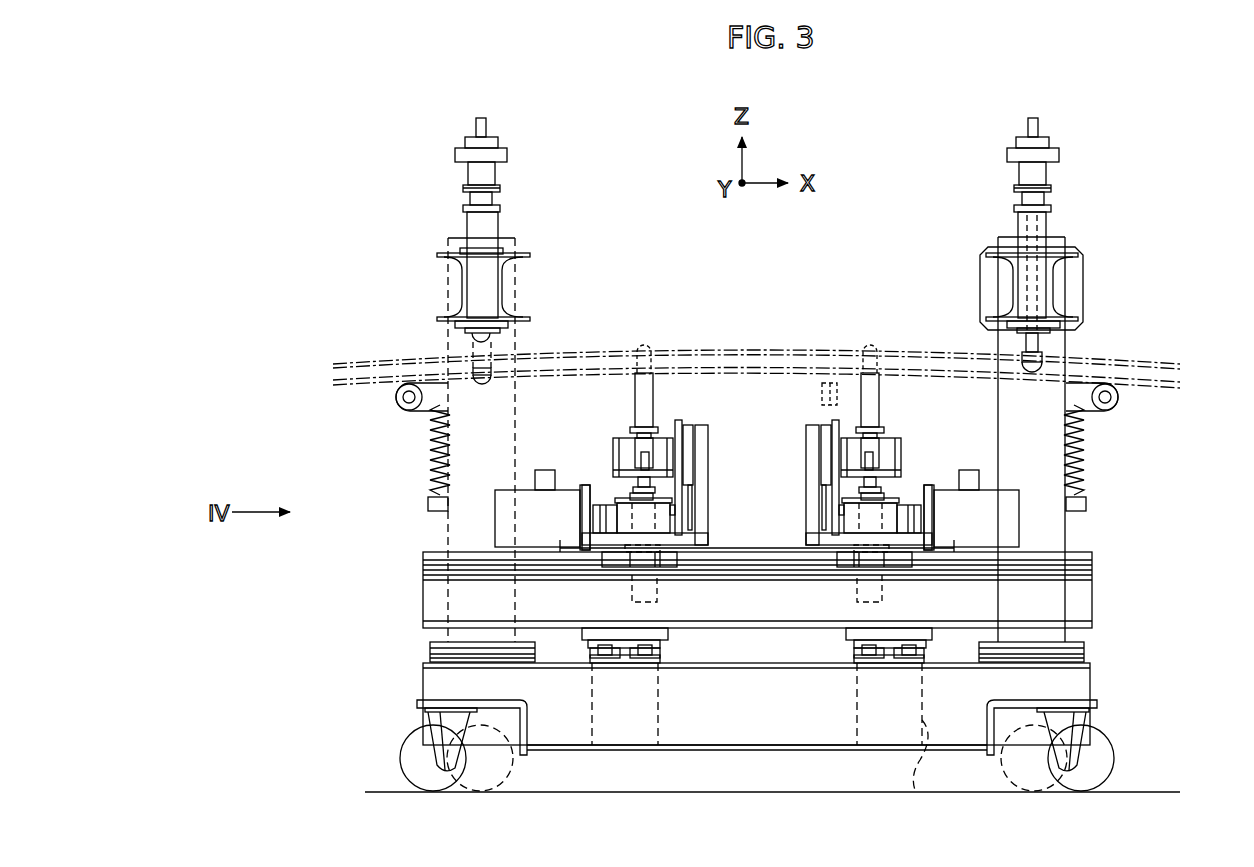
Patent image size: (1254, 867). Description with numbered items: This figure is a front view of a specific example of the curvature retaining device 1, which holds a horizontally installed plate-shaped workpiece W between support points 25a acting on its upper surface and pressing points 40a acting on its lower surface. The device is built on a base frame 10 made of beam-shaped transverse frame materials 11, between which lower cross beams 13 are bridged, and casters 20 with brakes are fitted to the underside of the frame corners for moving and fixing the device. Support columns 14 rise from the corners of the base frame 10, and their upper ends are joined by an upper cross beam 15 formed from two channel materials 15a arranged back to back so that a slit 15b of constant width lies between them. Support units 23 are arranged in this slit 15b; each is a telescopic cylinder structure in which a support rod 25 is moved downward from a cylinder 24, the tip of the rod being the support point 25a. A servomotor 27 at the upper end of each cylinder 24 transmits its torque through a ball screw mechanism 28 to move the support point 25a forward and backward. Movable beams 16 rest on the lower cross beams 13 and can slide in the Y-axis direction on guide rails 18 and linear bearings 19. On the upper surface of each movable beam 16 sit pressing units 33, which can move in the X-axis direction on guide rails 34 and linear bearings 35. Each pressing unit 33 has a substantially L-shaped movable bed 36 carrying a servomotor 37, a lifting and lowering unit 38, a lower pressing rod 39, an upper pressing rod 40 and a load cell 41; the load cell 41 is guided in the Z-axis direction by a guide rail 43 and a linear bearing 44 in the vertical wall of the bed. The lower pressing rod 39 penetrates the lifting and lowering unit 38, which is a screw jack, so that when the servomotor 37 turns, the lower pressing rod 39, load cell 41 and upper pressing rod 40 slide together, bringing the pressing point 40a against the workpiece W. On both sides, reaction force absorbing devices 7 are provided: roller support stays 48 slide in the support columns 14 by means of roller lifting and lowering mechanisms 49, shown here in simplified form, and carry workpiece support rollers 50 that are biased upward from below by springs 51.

The curvature retaining device 1 is at (613, 181).
The reaction force absorbing device 7 is at (738, 447).
The base frame 10 is at (717, 752).
The transverse frame material 11 is at (797, 733).
The lower cross beam 13 is at (590, 716).
The support column 14 is at (446, 528).
The upper cross beam 15 is at (734, 261).
The channel material 15a is at (440, 253).
The slit 15b is at (488, 285).
The movable beam 16 is at (422, 589).
The guide rail 18 is at (668, 652).
The linear bearing 19 is at (600, 663).
The caster 20 is at (403, 748).
The support unit 23 is at (445, 189).
The cylinder 24 is at (498, 221).
The support rod 25 is at (492, 357).
The support point 25a is at (470, 340).
The servomotor 27 is at (462, 143).
The ball screw mechanism 28 is at (1030, 285).
The pressing unit 33 is at (757, 421).
The guide rail 34 is at (570, 556).
The linear bearing 35 is at (612, 567).
The movable bed 36 is at (700, 427).
The servomotor 37 is at (533, 490).
The lifting and lowering unit 38 is at (617, 500).
The lower pressing rod 39 is at (660, 592).
The upper pressing rod 40 is at (634, 400).
The pressing point 40a is at (644, 350).
The load cell 41 is at (614, 445).
The guide rail 43 is at (693, 507).
The linear bearing 44 is at (694, 455).
The roller support stay 48 is at (432, 405).
The roller lifting and lowering mechanism 49 is at (397, 457).
The workpiece support roller 50 is at (396, 400).
The spring 51 is at (432, 479).
The plate-shaped workpiece W is at (770, 353).